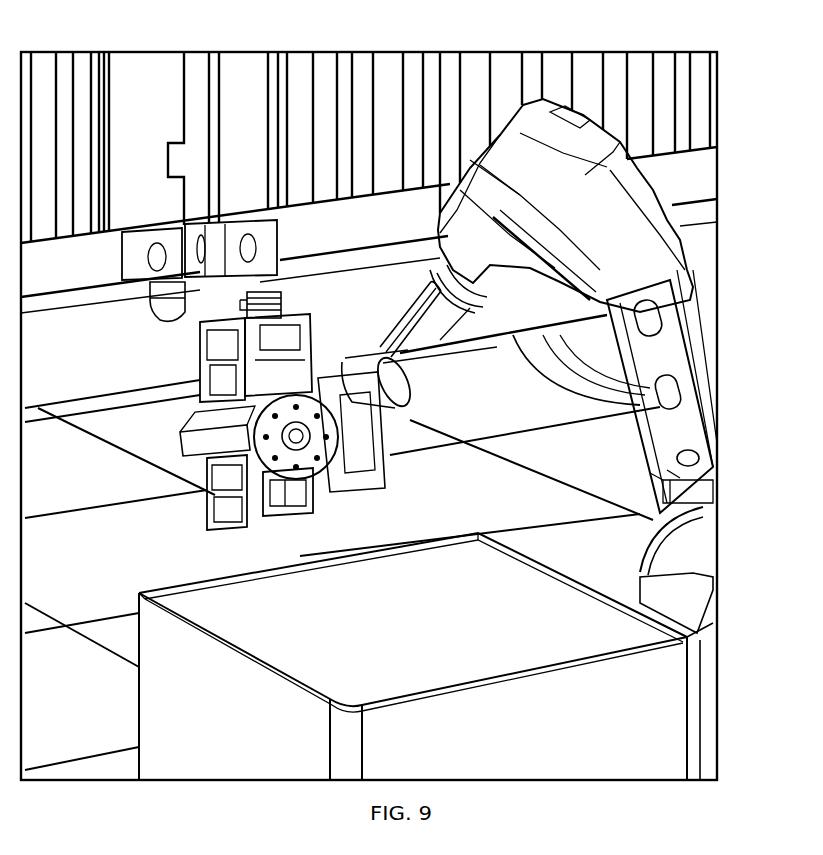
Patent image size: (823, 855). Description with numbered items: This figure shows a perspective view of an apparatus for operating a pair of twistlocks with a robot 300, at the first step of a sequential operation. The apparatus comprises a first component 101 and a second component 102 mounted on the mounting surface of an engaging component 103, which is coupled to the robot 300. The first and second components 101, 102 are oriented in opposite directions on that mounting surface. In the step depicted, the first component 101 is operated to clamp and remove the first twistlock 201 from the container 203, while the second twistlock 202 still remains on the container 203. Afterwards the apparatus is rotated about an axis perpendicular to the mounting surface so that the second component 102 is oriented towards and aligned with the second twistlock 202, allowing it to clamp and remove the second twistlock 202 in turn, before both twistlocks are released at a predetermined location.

The container 203 is at (165, 72).
The second twistlock 202 is at (160, 303).
The first twistlock 201 is at (282, 299).
The first component 101 is at (200, 343).
The second component 102 is at (210, 509).
The engaging component 103 is at (261, 478).
The robot 300 is at (690, 338).